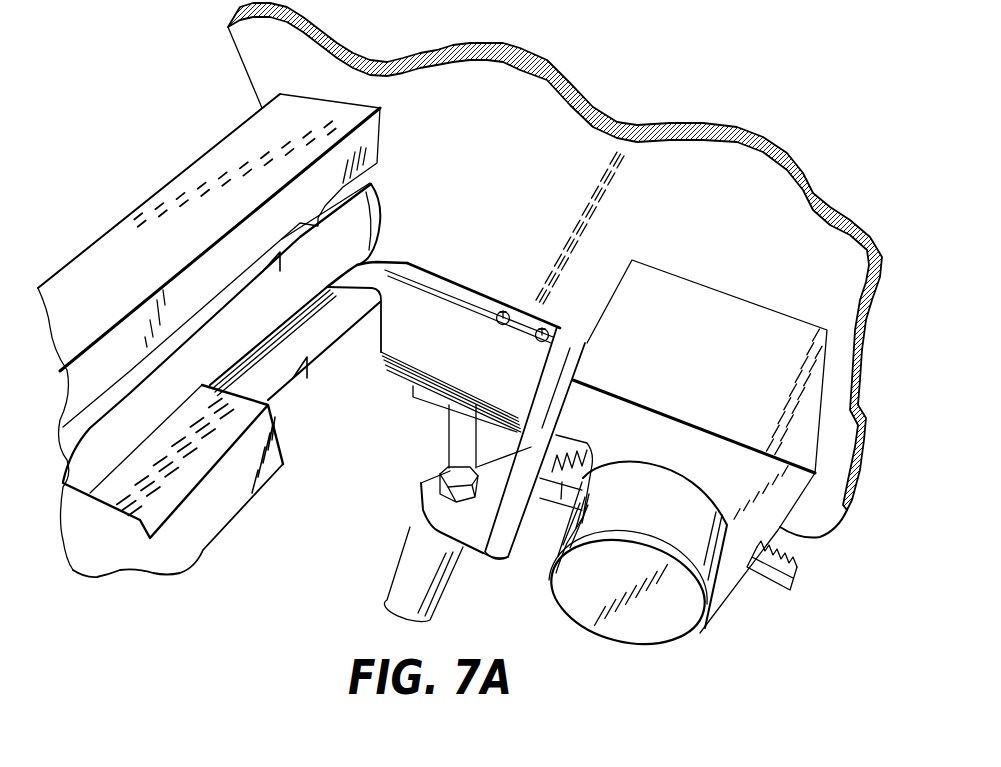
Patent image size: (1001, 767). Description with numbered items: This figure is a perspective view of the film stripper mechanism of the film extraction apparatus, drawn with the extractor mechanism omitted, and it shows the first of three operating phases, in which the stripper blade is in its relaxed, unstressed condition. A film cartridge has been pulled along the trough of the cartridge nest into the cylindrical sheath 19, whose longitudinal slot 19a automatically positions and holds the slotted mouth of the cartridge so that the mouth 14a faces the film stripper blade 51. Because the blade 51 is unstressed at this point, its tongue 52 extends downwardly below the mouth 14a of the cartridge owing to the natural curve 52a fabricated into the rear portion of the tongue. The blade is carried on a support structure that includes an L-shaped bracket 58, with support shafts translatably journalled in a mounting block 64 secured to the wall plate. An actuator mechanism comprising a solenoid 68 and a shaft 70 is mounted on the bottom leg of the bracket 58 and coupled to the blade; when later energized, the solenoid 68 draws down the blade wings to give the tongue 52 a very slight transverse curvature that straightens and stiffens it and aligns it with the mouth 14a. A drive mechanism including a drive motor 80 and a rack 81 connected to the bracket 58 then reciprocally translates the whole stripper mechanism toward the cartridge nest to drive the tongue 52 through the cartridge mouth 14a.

The mouth of the cartridge 14a is at (337, 218).
The cylindrical sheath 19 is at (237, 333).
The longitudinal slot 19a is at (180, 353).
The film stripper blade 51 is at (466, 284).
The stripper blade tongue 52 is at (371, 263).
The natural curve 52a is at (393, 264).
The L-shaped bracket 58 is at (477, 560).
The mounting block 64 is at (751, 300).
The solenoid 68 is at (403, 553).
The shaft 70 is at (453, 434).
The drive motor 80 is at (673, 645).
The rack 81 is at (783, 593).